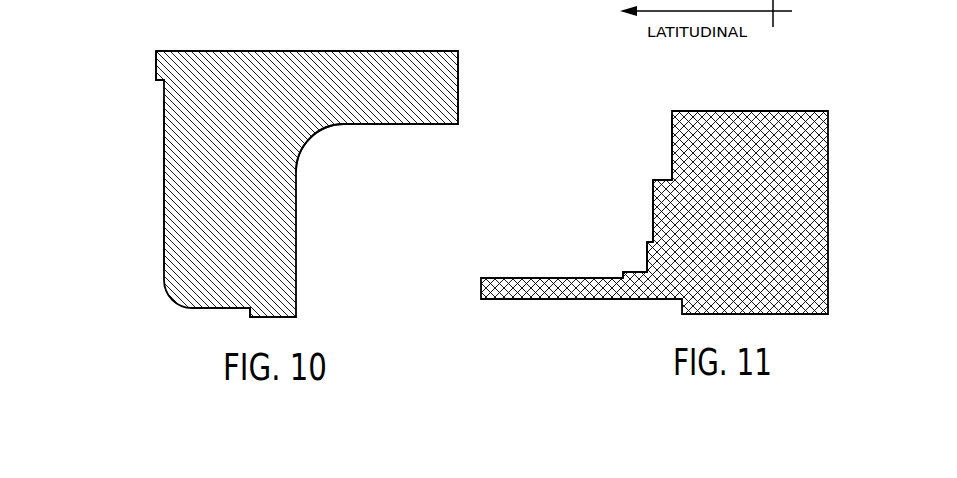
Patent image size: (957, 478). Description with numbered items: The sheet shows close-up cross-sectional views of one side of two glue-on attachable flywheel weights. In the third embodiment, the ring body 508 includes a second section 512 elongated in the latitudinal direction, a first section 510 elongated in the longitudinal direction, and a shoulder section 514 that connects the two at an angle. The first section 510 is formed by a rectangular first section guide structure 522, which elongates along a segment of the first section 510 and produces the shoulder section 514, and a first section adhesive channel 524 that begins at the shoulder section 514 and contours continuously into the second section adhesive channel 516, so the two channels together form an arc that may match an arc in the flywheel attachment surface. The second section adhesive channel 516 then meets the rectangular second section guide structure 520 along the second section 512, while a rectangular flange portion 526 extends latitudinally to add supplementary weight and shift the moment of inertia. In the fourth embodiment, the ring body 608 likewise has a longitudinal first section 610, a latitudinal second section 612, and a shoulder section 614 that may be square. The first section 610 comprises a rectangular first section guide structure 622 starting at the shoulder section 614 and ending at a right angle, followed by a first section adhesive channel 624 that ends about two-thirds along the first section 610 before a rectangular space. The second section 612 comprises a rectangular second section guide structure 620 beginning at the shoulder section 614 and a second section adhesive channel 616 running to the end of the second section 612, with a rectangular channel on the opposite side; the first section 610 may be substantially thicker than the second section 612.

In FIG. 10, the ring body 508 is at (195, 51).
In FIG. 10, the first section 510 is at (297, 252).
In FIG. 10, the second section 512 is at (330, 51).
In FIG. 10, the shoulder section 514 is at (312, 135).
In FIG. 10, the second section adhesive channel 516 is at (223, 308).
In FIG. 10, the second section guide structure 520 is at (270, 317).
In FIG. 10, the first section guide structure 522 is at (155, 65).
In FIG. 10, the first section adhesive channel 524 is at (164, 200).
In FIG. 10, the flange portion 526 is at (458, 88).
In FIG. 11, the ring body 608 is at (735, 111).
In FIG. 11, the first section 610 is at (828, 207).
In FIG. 11, the second section 612 is at (573, 300).
In FIG. 11, the shoulder section 614 is at (828, 313).
In FIG. 11, the second section adhesive channel 616 is at (567, 278).
In FIG. 11, the second section guide structure 620 is at (643, 272).
In FIG. 11, the first section guide structure 622 is at (653, 196).
In FIG. 11, the first section adhesive channel 624 is at (672, 133).